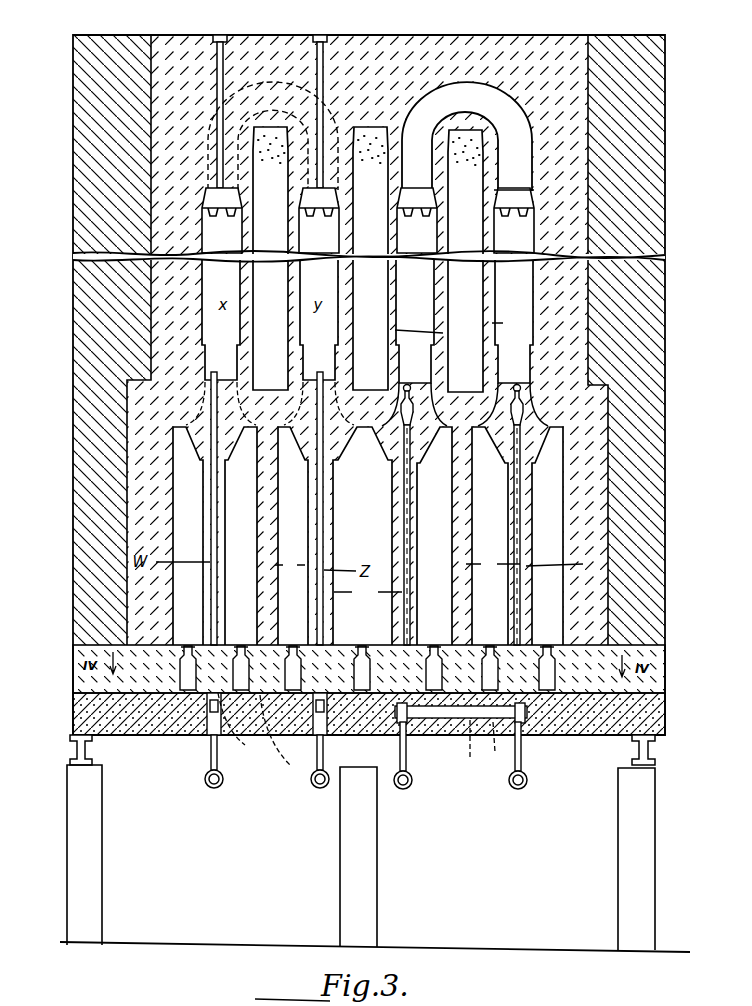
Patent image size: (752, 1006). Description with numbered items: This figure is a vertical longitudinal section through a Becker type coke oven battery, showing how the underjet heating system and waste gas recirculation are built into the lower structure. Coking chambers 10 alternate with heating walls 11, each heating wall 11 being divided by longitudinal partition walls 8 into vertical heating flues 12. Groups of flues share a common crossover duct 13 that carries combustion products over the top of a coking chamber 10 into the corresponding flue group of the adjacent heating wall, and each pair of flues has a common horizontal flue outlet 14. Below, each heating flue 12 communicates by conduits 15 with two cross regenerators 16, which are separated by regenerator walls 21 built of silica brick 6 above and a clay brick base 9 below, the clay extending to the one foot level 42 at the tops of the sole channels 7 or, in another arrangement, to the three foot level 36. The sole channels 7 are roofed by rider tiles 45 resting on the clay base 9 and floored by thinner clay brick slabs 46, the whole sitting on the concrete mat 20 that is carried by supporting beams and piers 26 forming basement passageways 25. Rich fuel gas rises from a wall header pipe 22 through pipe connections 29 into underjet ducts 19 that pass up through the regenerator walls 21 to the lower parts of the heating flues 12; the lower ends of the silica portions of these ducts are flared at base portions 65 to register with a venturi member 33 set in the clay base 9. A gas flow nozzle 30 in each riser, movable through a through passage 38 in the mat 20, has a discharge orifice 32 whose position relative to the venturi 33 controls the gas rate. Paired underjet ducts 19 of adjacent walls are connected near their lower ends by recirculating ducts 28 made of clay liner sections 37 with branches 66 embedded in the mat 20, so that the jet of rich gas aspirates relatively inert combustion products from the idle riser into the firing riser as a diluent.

The crossover duct 13 is at (271, 78).
The horizontal flue outlet 14 is at (520, 199).
The longitudinal partition wall 8 is at (204, 210).
The coking chamber 10 is at (258, 281).
The heating flue 12 is at (211, 281).
The heating wall 11 is at (459, 323).
The conduit 15 is at (516, 424).
The cross regenerator 16 is at (177, 534).
The underjet duct 19 is at (218, 585).
The silica brick 6 is at (397, 564).
The regenerator wall 21 is at (470, 578).
The three foot level 36 is at (228, 638).
The base portion of riser 65 is at (210, 640).
The one foot level 42 is at (313, 644).
The rider tile 45 is at (340, 645).
The sole channel 7 is at (381, 646).
The venturi member 33 is at (210, 698).
The discharge orifice 32 is at (205, 712).
The clay brick base 9 is at (306, 677).
The clay brick slab 46 is at (490, 707).
The concrete mat 20 is at (655, 723).
The gas flow nozzle 30 is at (236, 738).
The clay liner section 37 is at (362, 731).
The through passage 38 is at (327, 736).
The recirculating duct 28 is at (366, 739).
The pipe connection 29 is at (208, 756).
The wall header pipe 22 is at (309, 787).
The branch 66 is at (524, 717).
The basement passageway 25 is at (203, 866).
The supporting beams and piers 26 is at (70, 750).